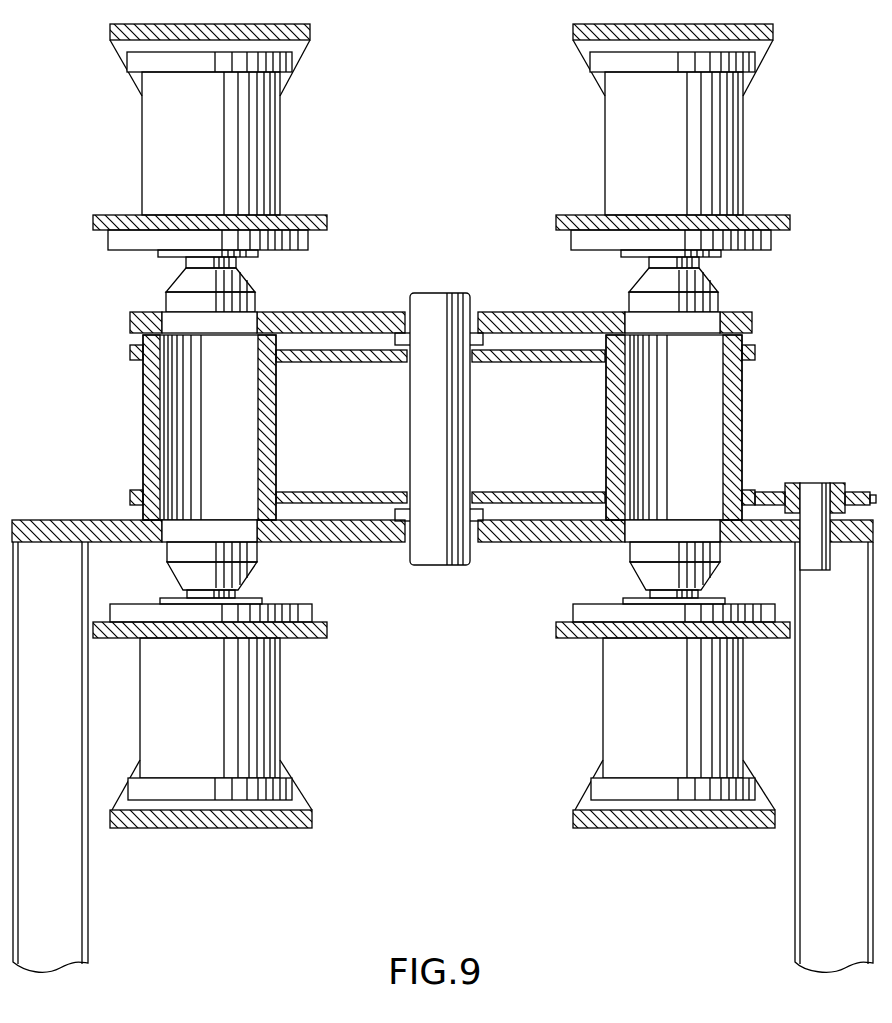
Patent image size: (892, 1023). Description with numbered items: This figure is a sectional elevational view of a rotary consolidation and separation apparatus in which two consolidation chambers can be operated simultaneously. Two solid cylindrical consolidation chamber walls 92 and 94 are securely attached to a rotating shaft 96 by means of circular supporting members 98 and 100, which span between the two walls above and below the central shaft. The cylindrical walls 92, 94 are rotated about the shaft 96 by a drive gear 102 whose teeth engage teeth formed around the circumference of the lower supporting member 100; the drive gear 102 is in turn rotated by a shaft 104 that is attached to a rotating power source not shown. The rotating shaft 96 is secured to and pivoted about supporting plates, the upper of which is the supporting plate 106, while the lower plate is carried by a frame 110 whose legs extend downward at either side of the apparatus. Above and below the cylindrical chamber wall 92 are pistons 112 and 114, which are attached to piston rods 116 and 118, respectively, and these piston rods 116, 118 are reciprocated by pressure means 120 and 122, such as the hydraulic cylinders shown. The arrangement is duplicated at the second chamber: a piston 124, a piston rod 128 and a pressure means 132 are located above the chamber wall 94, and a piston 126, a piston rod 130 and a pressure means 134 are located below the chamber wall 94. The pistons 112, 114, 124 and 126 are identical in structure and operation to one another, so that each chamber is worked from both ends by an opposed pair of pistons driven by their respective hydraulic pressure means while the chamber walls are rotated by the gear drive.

The cylindrical consolidation chamber wall 92 is at (150, 414).
The cylindrical consolidation chamber wall 94 is at (735, 418).
The rotating shaft 96 is at (458, 424).
The circular supporting member 98 is at (339, 353).
The circular supporting member 100 is at (350, 492).
The drive gear 102 is at (778, 492).
The shaft 104 is at (812, 565).
The supporting plate 106 is at (356, 318).
The frame 110 is at (75, 916).
The piston 112 is at (240, 292).
The piston 114 is at (180, 560).
The piston rod 116 is at (190, 258).
The piston rod 118 is at (235, 592).
The pressure means 120 is at (270, 131).
The pressure means 122 is at (268, 719).
The piston 124 is at (700, 292).
The piston 126 is at (700, 560).
The piston rod 128 is at (653, 258).
The piston rod 130 is at (652, 592).
The pressure means 132 is at (612, 129).
The pressure means 134 is at (612, 716).